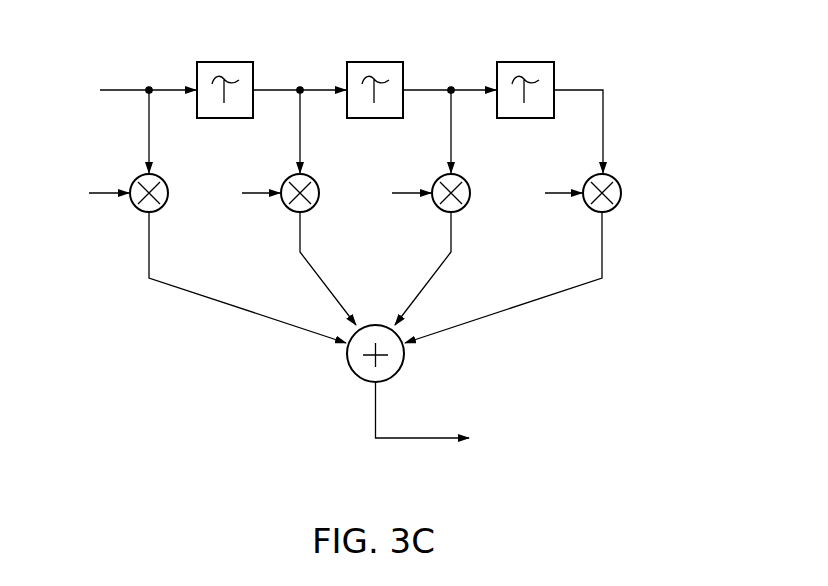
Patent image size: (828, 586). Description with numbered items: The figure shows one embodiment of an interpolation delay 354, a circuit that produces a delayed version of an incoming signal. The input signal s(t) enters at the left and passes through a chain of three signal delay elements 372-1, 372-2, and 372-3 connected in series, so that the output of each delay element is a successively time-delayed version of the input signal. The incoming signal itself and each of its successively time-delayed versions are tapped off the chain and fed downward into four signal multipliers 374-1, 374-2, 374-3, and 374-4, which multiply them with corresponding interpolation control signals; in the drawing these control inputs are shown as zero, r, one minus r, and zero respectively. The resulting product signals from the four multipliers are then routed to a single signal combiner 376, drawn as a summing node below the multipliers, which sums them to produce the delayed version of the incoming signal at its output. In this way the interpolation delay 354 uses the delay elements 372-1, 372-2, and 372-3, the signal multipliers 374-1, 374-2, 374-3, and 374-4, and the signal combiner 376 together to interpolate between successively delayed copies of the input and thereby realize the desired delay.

The interpolation delay 354 is at (156, 345).
The signal delay element 372-1 is at (246, 68).
The signal delay element 372-2 is at (396, 68).
The signal delay element 372-3 is at (547, 68).
The signal multiplier 374-1 is at (164, 186).
The signal multiplier 374-2 is at (315, 186).
The signal multiplier 374-3 is at (466, 186).
The signal multiplier 374-4 is at (617, 186).
The signal combiner 376 is at (357, 370).